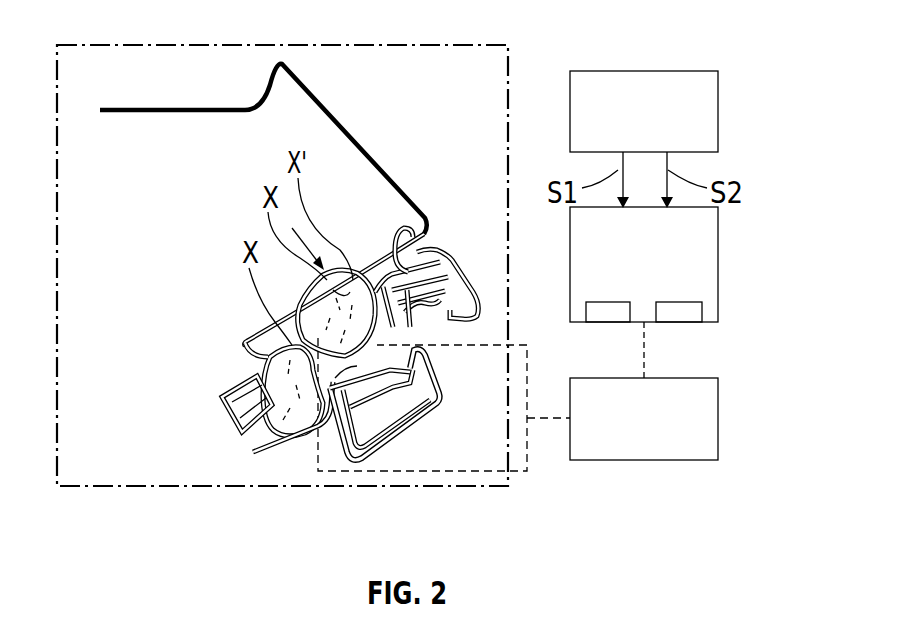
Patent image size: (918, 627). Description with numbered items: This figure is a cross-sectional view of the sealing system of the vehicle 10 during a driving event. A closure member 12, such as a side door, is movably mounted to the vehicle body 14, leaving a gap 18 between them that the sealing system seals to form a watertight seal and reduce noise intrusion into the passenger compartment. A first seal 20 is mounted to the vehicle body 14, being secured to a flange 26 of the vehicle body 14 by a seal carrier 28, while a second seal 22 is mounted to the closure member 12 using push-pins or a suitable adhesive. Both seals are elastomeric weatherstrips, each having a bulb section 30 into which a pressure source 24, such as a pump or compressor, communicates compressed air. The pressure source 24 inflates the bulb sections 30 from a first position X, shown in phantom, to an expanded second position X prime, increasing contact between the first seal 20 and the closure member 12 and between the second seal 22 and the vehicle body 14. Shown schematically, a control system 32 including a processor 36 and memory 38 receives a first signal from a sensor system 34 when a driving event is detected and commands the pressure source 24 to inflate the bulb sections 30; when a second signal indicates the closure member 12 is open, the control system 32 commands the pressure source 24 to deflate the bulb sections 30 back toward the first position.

The vehicle 10 is at (152, 84).
The closure member 12 is at (438, 403).
The vehicle body 14 is at (342, 103).
The gap 18 is at (413, 253).
The first seal 20 is at (298, 465).
The second seal 22 is at (360, 250).
The pressure source 24 is at (718, 418).
The flange 26 is at (262, 370).
The seal carrier 28 is at (238, 410).
The bulb section 30 is at (396, 250).
The control system 32 is at (718, 264).
The sensor system 34 is at (718, 111).
The processor 36 is at (610, 323).
The memory 38 is at (678, 323).